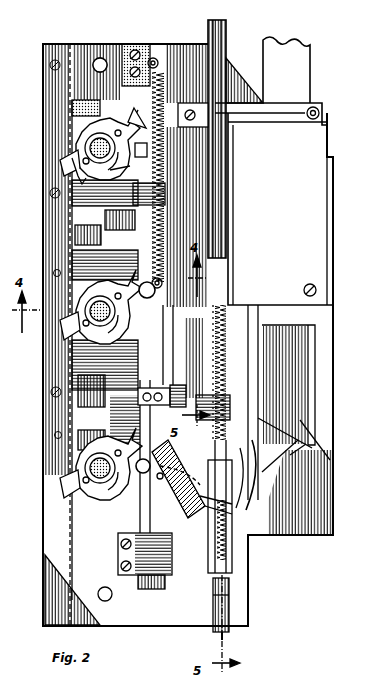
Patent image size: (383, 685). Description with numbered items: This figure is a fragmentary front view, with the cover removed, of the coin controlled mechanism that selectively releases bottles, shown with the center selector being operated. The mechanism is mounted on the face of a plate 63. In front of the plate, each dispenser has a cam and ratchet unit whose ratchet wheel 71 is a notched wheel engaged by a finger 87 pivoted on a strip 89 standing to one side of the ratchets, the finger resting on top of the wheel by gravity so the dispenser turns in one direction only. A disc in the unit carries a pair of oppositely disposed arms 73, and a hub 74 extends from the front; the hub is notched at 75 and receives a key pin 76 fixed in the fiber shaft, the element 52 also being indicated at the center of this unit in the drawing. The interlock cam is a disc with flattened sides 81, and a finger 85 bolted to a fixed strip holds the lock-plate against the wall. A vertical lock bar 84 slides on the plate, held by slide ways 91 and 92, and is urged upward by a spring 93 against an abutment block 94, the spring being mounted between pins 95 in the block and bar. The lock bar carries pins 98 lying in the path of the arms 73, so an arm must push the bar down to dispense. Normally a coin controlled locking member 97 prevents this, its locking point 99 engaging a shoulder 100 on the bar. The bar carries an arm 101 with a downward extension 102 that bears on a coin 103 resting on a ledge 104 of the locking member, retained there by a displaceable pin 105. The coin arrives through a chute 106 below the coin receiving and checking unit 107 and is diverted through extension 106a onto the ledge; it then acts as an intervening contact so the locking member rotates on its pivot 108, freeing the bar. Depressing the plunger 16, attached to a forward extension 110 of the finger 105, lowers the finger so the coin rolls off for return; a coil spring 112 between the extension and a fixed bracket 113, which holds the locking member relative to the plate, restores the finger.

The plunger 16 is at (226, 205).
The rotor shaft 52 is at (75, 145).
The plate 63 is at (62, 538).
The ratchet wheel 71 is at (66, 163).
The arms 73 is at (180, 120).
The hub 74 is at (88, 500).
The notch 75 is at (78, 173).
The key pin 76 is at (77, 137).
The flattened sides 81 is at (72, 125).
The lock bar 84 is at (168, 190).
The finger 85 is at (75, 237).
The finger 87 is at (85, 108).
The strip 89 is at (62, 363).
The slide way 91 is at (165, 210).
The slide way 92 is at (155, 580).
The spring 93 is at (170, 152).
The abutment block 94 is at (148, 50).
The pins 95 is at (158, 57).
The locking member 97 is at (192, 504).
The pins 98 is at (224, 304).
The locking point 99 is at (216, 436).
The shoulder 100 is at (160, 446).
The arm 101 is at (165, 396).
The downward extension 102 is at (256, 420).
The coin 103 is at (262, 436).
The ledge 104 is at (242, 504).
The displaceable pin 105 is at (230, 572).
The chute 106 is at (297, 376).
The extension 106a is at (248, 498).
The coin receiving and checking unit 107 is at (318, 114).
The pivot 108 is at (172, 540).
The forward extension 110 is at (228, 630).
The coil spring 112 is at (232, 540).
The fixed bracket 113 is at (232, 512).